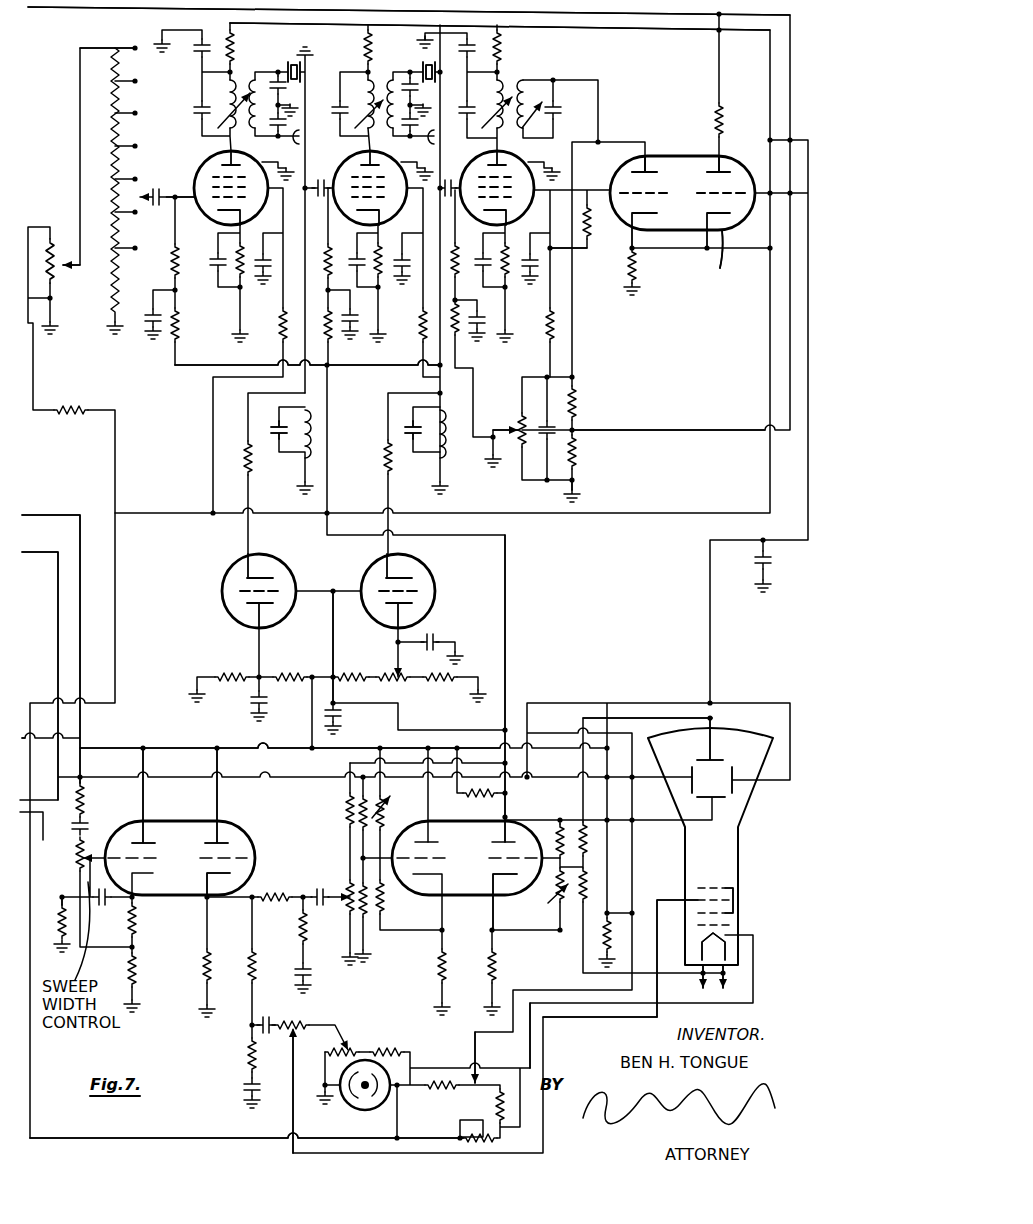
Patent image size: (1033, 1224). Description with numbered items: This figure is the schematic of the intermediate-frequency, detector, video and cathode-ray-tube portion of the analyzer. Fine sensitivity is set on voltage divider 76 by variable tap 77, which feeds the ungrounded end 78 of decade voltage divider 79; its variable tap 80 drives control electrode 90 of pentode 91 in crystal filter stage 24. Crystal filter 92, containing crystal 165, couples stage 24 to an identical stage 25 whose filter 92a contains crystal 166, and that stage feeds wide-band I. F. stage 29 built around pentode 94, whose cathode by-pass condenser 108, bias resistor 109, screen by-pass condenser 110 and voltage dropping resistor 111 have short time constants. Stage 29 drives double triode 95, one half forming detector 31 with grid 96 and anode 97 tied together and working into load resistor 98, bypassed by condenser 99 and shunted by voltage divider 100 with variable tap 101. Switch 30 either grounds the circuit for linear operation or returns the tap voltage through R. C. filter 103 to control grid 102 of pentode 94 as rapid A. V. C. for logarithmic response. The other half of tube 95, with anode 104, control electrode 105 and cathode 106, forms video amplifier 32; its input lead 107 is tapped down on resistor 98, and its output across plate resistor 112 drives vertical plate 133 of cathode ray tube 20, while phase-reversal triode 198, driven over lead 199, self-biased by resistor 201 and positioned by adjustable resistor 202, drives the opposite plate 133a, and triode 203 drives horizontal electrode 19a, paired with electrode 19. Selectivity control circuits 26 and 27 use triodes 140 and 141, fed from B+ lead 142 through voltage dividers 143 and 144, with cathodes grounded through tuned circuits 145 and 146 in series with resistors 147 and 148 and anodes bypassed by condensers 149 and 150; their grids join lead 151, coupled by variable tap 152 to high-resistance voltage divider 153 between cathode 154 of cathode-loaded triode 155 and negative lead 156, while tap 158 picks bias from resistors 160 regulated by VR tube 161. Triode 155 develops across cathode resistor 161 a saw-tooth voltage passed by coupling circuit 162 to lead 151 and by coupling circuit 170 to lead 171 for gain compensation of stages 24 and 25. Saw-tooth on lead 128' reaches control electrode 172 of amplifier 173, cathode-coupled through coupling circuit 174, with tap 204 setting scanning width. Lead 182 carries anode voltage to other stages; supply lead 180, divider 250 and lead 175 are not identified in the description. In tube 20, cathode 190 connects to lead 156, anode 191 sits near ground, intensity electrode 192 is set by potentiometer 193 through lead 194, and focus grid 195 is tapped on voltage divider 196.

The ungrounded end 78 is at (118, 48).
The decade voltage divider 79 is at (136, 162).
The variable tap 80 is at (147, 200).
The control electrode 90 is at (213, 196).
The pentode 91 is at (210, 160).
The crystal filter 92 is at (270, 80).
The crystal filter 92a is at (422, 100).
The crystal 165 is at (306, 58).
The crystal 166 is at (423, 62).
The I. F. stage 29 is at (522, 72).
The supply lead 180 is at (115, 640).
The anode 97 is at (645, 155).
The double triode 95 is at (680, 156).
The plate resistor 112 is at (722, 128).
The anode 104 is at (725, 165).
The control grid 102 is at (449, 180).
The pentode 94 is at (528, 165).
The grid 96 is at (625, 200).
The voltage dropping resistor 111 is at (585, 250).
The control electrode 105 is at (730, 198).
The cathode 106 is at (720, 250).
The crystal filter amplifier stage 24 is at (224, 189).
The crystal filter amplifier stage 25 is at (350, 243).
The cathode by-pass condenser 108 is at (477, 311).
The bias resistor 109 is at (530, 275).
The screen grid by-pass condenser 110 is at (588, 255).
The detector 31 is at (663, 280).
The video amplifier 32 is at (682, 212).
The voltage divider 76 is at (46, 258).
The variable tap 77 is at (63, 265).
The lead 171 is at (345, 835).
The tuned circuit 145 is at (279, 430).
The resistor 147 is at (250, 475).
The tuned circuit 146 is at (440, 455).
The resistor 148 is at (388, 475).
The voltage divider 100 is at (510, 415).
The two position switch 30 is at (493, 430).
The condenser 99 is at (540, 410).
The load resistor 98 is at (572, 410).
The variable tap 101 is at (522, 447).
The R. C. filter 103 is at (462, 335).
The input lead 107 is at (660, 430).
The lead 182 is at (82, 600).
The lead 128' is at (178, 684).
The triode 140 is at (222, 607).
The triode 141 is at (433, 576).
The selectivity control circuit 26 is at (240, 605).
The selectivity control circuit 27 is at (417, 591).
The voltage divider 143 is at (280, 677).
The lead 151 is at (543, 1135).
The condenser 150 is at (293, 1105).
The condenser 149 is at (252, 703).
The voltage divider 144 is at (363, 680).
The B+ lead 142 is at (43, 840).
The resistors 160 is at (380, 1052).
The lead 199 is at (623, 717).
The vertical plate 133 is at (718, 760).
The deflection electrode 19a is at (745, 780).
The deflection plate 19 is at (690, 785).
The vertical plate 133a is at (725, 800).
The cathode ray tube 20 is at (745, 815).
The control electrode 172 is at (127, 852).
The amplifier 173 is at (150, 818).
The cathode loaded triode 155 is at (230, 820).
The cathode 154 is at (217, 880).
The coupling circuit 170 is at (372, 820).
The triode 203 is at (413, 880).
The plate loaded triode 198 is at (515, 890).
The adjustable resistor 202 is at (563, 915).
The resistor 201 is at (493, 960).
The voltage divider 250 is at (548, 903).
The focus grid 195 is at (698, 900).
The anode 191 is at (733, 890).
The cathode 190 is at (725, 935).
The intensity control electrode 192 is at (690, 958).
The lead 175 is at (62, 897).
The coupling circuit 174 is at (65, 920).
The tap 204 is at (102, 890).
The cathode resistor 161 is at (358, 1110).
The coupling circuit 162 is at (250, 1025).
The variable tap 152 is at (293, 1045).
The high resistance voltage divider 153 is at (310, 1025).
The variable tap 158 is at (348, 1045).
The voltage divider 196 is at (475, 1085).
The potentiometer 193 is at (477, 1120).
The lead 156 is at (530, 1105).
The lead 194 is at (640, 1025).